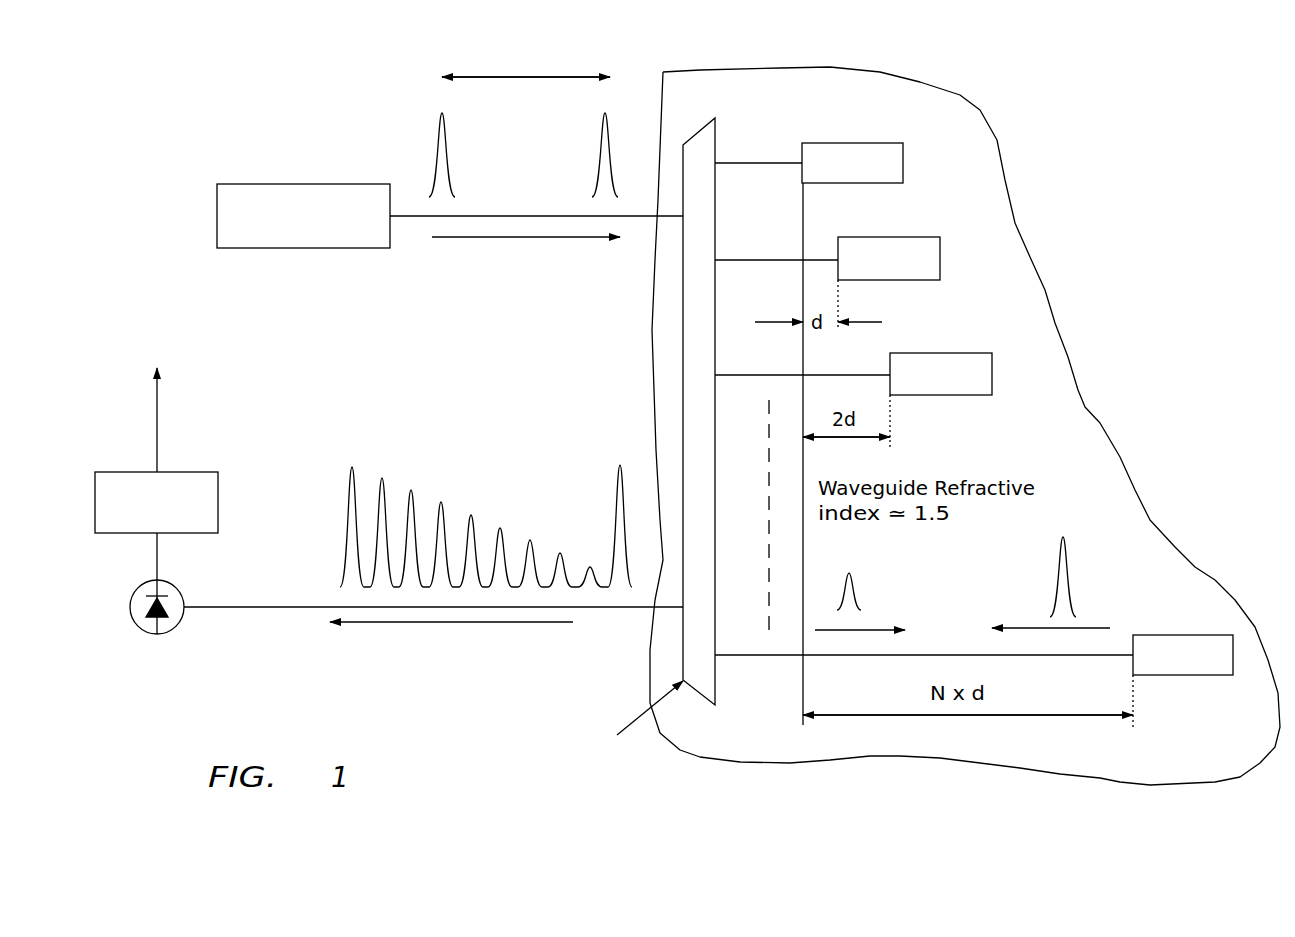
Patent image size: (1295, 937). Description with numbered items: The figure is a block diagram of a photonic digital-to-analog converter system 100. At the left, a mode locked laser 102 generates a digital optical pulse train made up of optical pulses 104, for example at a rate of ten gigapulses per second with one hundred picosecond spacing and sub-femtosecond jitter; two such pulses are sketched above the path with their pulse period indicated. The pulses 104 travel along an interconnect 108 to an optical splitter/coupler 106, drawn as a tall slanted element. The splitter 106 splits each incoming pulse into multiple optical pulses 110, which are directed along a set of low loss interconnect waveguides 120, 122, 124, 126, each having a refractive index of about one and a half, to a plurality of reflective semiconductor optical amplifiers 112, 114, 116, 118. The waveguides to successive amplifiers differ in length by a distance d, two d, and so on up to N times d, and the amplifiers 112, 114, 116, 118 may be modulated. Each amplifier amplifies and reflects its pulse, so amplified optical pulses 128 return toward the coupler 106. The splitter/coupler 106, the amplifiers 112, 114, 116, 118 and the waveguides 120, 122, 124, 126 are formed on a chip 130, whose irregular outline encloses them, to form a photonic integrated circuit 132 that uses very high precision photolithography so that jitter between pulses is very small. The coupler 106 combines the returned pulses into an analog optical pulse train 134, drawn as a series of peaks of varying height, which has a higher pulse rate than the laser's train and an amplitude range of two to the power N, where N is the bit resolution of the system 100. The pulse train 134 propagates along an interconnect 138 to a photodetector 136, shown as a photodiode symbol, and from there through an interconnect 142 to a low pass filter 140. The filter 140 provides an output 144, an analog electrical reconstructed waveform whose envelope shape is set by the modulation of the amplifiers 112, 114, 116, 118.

The photonic digital-to-analog converter system 100 is at (228, 130).
The mode locked laser 102 is at (360, 183).
The optical pulses 104 is at (447, 148).
The optical splitter/coupler 106 is at (683, 162).
The interconnect 108 is at (416, 220).
The optical pulses 110 is at (857, 590).
The reflective semiconductor optical amplifier 112 is at (855, 143).
The reflective semiconductor optical amplifier 114 is at (880, 237).
The reflective semiconductor optical amplifier 116 is at (946, 353).
The reflective semiconductor optical amplifier 118 is at (1152, 635).
The interconnect waveguide 120 is at (735, 162).
The interconnect waveguide 122 is at (754, 259).
The interconnect waveguide 124 is at (750, 374).
The interconnect waveguide 126 is at (738, 657).
The amplified optical pulses 128 is at (1073, 578).
The chip 130 is at (783, 83).
The photonic integrated circuit 132 is at (868, 100).
The optical pulse train 134 is at (470, 520).
The photodetector 136 is at (135, 620).
The interconnect 138 is at (262, 605).
The low pass filter 140 is at (222, 496).
The interconnect 142 is at (158, 558).
The output 144 is at (160, 438).